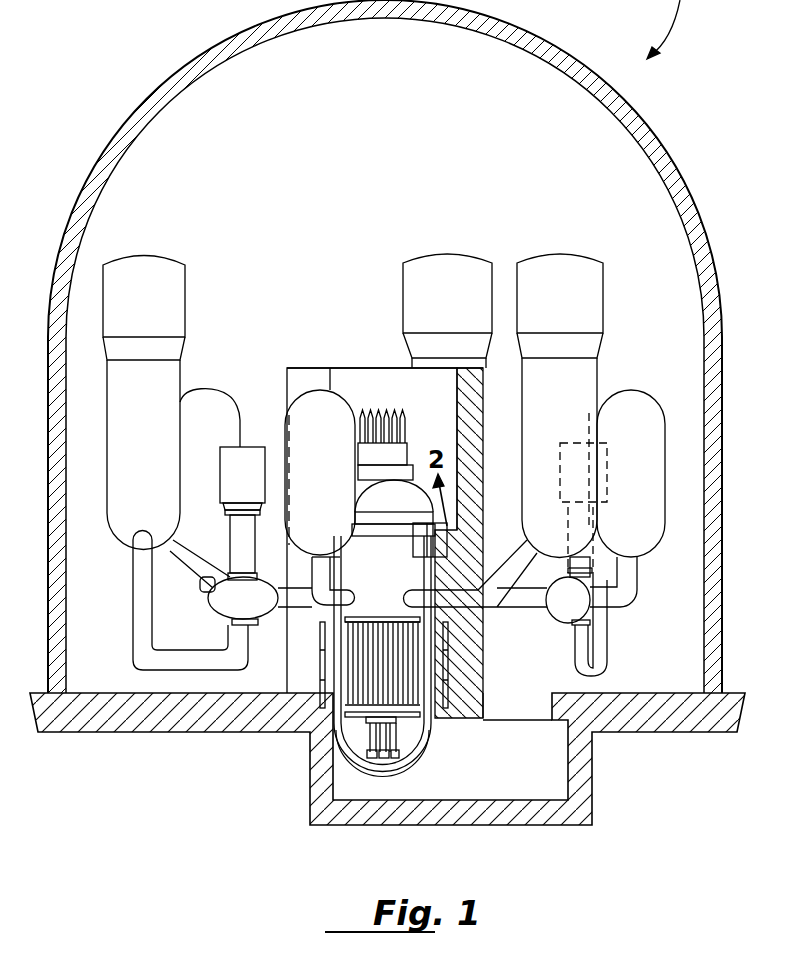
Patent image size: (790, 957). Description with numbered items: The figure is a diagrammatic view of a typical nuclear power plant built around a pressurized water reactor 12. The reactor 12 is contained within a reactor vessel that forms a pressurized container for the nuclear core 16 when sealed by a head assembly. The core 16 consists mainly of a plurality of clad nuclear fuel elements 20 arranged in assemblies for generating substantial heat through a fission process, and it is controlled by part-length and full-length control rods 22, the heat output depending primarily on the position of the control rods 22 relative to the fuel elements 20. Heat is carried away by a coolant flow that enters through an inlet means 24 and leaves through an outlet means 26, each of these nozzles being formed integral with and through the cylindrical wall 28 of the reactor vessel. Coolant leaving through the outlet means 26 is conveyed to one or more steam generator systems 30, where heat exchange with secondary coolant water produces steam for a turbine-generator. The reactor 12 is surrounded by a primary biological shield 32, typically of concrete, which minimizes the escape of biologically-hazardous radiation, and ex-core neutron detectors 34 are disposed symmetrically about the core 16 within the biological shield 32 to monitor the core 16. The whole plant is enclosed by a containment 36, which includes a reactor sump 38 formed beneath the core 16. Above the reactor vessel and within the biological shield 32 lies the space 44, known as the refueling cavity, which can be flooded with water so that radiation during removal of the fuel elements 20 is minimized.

The pressurized water reactor 12 is at (281, 386).
The nuclear core 16 is at (343, 631).
The clad nuclear fuel elements 20 is at (347, 698).
The control rods 22 is at (362, 410).
The inlet means 24 is at (320, 568).
The outlet means 26 is at (515, 550).
The cylindrical wall 28 is at (403, 760).
The steam generator systems 30 is at (156, 310).
The primary biological shield 32 is at (472, 682).
The ex-core neutron detectors 34 is at (320, 670).
The containment 36 is at (135, 108).
The reactor sump 38 is at (548, 784).
The space 44 is at (372, 449).